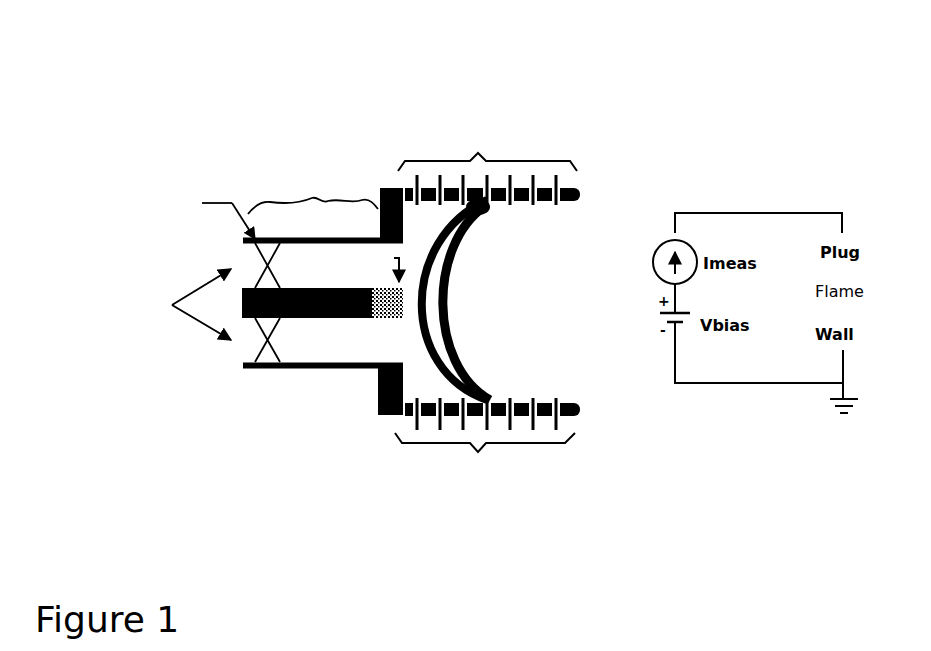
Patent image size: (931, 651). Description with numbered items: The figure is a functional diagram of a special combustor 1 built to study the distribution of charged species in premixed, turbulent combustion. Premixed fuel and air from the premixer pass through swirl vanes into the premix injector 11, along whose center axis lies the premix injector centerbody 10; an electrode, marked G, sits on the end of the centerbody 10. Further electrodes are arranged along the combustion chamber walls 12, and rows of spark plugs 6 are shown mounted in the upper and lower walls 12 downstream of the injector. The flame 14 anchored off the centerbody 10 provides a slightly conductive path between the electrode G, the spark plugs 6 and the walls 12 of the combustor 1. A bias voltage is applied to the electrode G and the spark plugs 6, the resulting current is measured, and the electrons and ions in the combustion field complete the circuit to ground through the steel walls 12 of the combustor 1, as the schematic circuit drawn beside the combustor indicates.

The combustor 1 is at (383, 135).
The spark plugs 6 is at (486, 288).
The premix injector centerbody 10 is at (357, 322).
The premix injector 11 is at (351, 236).
The combustion chamber walls 12 is at (584, 189).
The flame 14 is at (470, 265).